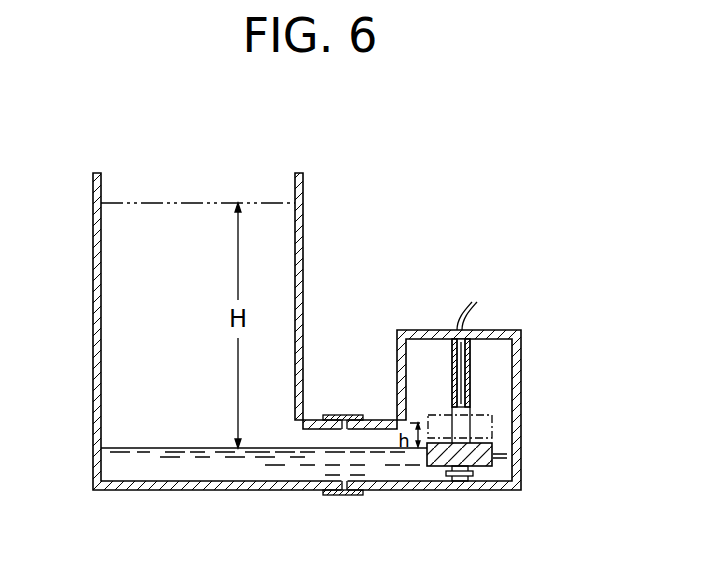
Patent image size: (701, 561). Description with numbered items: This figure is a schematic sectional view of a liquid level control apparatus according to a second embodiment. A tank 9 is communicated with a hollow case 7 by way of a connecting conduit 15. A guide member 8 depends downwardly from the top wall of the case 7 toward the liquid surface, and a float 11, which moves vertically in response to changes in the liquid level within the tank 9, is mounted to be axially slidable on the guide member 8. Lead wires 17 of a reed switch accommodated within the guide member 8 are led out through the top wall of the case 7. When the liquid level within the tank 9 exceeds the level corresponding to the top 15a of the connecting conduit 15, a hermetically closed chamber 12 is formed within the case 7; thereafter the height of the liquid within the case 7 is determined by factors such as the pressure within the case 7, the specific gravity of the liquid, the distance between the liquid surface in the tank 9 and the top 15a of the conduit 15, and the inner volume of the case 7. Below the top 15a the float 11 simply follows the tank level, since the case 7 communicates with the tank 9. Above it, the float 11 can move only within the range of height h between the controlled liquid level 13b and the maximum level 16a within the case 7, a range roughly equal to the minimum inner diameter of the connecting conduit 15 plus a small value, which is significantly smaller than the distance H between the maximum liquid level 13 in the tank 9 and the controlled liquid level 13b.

The hollow case 7 is at (487, 330).
The guide member 8 is at (470, 360).
The tank 9 is at (93, 383).
The float 11 is at (507, 457).
The hermetically closed chamber 12 is at (490, 380).
The maximum liquid level 13 is at (257, 200).
The controlled liquid level 13b is at (123, 450).
The connecting conduit 15 is at (310, 495).
The top of the connecting conduit 15a is at (315, 436).
The maximum level within the case 16a is at (494, 423).
The lead wires 17 is at (462, 312).